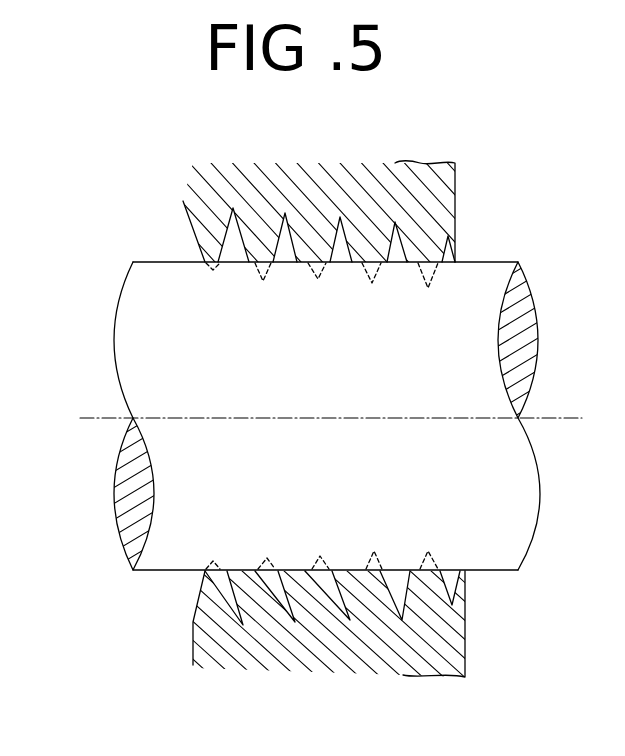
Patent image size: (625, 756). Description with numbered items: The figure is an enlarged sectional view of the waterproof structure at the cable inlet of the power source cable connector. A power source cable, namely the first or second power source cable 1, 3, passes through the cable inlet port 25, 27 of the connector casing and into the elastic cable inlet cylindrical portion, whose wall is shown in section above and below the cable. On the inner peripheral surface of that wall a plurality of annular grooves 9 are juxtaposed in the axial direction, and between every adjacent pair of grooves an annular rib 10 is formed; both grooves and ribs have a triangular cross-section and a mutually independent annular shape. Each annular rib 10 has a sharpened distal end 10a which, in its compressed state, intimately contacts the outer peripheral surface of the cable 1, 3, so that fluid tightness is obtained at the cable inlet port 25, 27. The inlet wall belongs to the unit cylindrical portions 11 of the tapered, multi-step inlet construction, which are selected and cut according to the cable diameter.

The first power source cable 1 is at (180, 498).
The second power source cable 3 is at (292, 421).
The annular grooves 9 is at (336, 234).
The annular ribs 10 is at (273, 253).
The sharpened distal end 10a is at (318, 281).
The unit cylindrical portions 11 is at (296, 645).
The cable inlet port 25 is at (461, 263).
The cable inlet port 27 is at (385, 425).